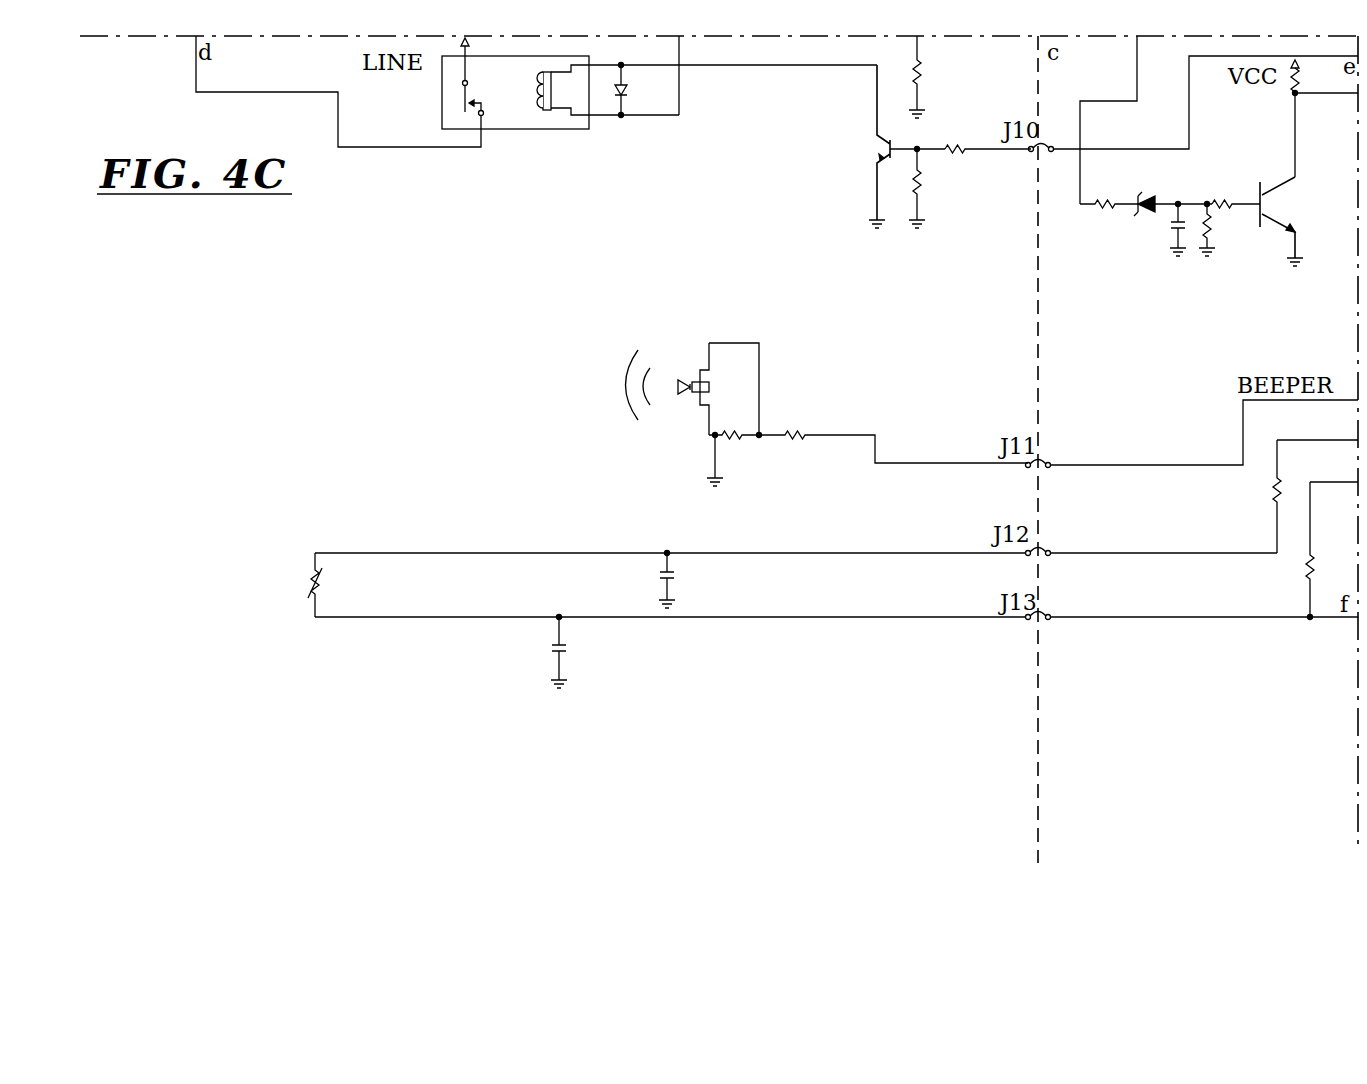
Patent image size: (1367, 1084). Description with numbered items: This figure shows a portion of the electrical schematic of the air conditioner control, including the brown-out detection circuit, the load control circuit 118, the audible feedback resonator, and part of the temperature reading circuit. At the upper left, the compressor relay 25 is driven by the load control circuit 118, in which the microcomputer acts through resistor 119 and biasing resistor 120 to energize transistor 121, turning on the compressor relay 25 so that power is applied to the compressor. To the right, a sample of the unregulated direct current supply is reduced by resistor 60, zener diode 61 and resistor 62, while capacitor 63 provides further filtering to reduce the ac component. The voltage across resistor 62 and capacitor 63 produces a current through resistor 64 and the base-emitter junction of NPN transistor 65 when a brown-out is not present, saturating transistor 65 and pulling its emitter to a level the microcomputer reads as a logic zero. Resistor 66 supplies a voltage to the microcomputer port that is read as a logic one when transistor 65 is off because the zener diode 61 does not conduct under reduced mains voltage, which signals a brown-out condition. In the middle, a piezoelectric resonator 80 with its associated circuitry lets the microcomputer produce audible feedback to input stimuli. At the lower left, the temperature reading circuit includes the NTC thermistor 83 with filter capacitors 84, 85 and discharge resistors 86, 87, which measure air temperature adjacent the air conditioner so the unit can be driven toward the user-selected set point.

The compressor relay 25 is at (511, 143).
The load control circuit 118 is at (898, 250).
The resistor 119 is at (963, 148).
The biasing resistor 120 is at (920, 178).
The transistor 121 is at (884, 152).
The resistor 60 is at (1105, 212).
The zener diode 61 is at (1150, 196).
The resistor 62 is at (1212, 226).
The capacitor 63 is at (1172, 225).
The resistor 64 is at (1226, 200).
The NPN transistor 65 is at (1265, 206).
The resistor 66 is at (1292, 78).
The piezoelectric resonator 80 is at (772, 378).
The NTC thermistor 83 is at (318, 584).
The filter capacitor 84 is at (672, 581).
The filter capacitor 85 is at (563, 656).
The discharge resistor 86 is at (1275, 487).
The discharge resistor 87 is at (1308, 567).